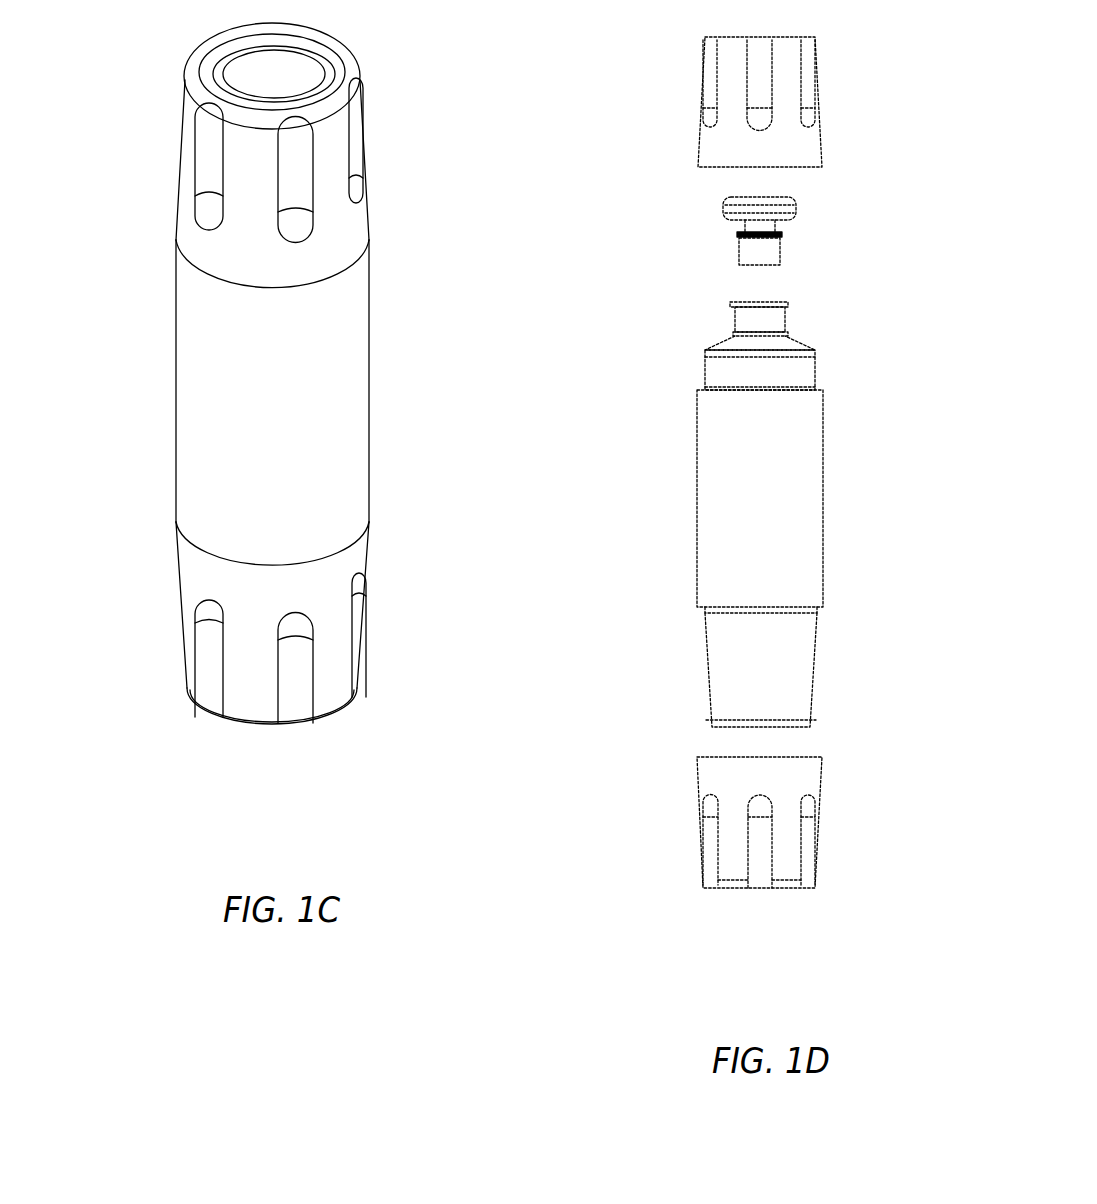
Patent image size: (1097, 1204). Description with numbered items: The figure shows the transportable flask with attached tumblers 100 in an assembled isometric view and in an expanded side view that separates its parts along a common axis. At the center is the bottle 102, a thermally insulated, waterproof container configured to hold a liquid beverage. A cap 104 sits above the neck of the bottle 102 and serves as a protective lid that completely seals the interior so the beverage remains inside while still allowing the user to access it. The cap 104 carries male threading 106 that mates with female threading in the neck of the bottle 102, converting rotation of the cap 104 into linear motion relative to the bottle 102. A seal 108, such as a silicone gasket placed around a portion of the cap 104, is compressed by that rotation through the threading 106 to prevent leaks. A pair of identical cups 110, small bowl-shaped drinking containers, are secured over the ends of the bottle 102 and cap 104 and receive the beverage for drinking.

In FIG. 1C, the transportable flask with attached tumblers 100 is at (147, 65).
In FIG. 1D, the transportable flask with attached tumblers 100 is at (652, 65).
In FIG. 1C, the bottle 102 is at (357, 421).
In FIG. 1D, the bottle 102 is at (708, 450).
In FIG. 1D, the cap 104 is at (796, 212).
In FIG. 1D, the threading 106 is at (778, 262).
In FIG. 1D, the seal 108 is at (782, 235).
In FIG. 1C, the pair of cups 110 is at (362, 142).
In FIG. 1D, the pair of cups 110 is at (700, 137).